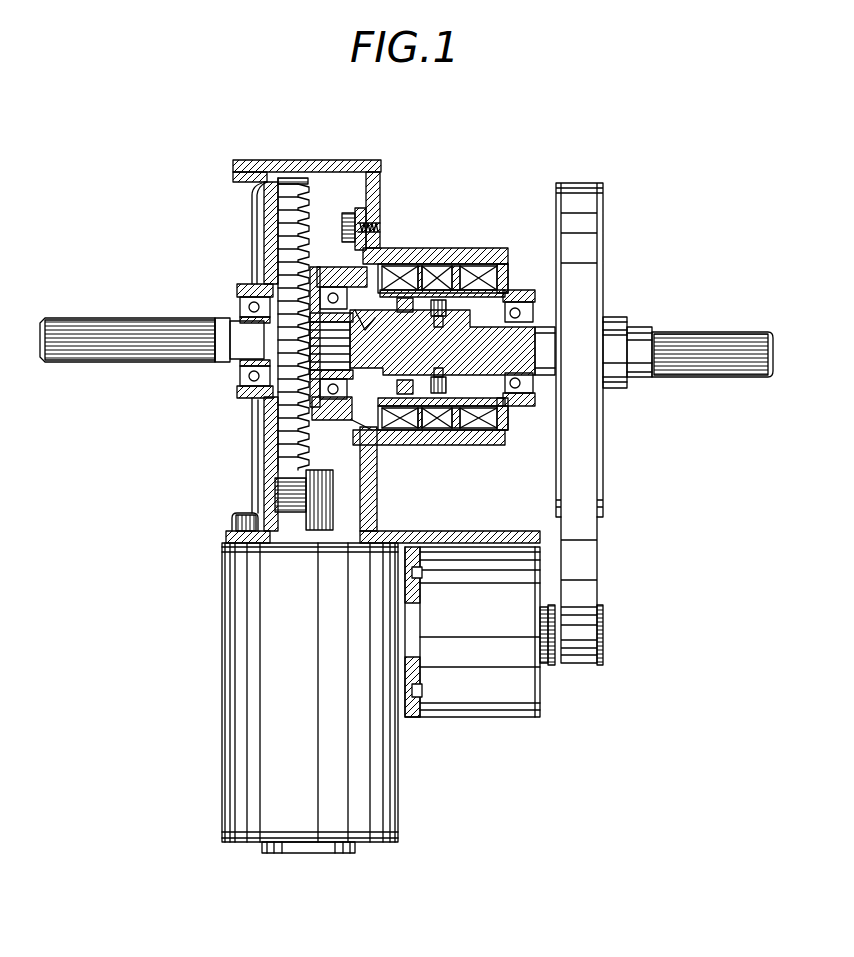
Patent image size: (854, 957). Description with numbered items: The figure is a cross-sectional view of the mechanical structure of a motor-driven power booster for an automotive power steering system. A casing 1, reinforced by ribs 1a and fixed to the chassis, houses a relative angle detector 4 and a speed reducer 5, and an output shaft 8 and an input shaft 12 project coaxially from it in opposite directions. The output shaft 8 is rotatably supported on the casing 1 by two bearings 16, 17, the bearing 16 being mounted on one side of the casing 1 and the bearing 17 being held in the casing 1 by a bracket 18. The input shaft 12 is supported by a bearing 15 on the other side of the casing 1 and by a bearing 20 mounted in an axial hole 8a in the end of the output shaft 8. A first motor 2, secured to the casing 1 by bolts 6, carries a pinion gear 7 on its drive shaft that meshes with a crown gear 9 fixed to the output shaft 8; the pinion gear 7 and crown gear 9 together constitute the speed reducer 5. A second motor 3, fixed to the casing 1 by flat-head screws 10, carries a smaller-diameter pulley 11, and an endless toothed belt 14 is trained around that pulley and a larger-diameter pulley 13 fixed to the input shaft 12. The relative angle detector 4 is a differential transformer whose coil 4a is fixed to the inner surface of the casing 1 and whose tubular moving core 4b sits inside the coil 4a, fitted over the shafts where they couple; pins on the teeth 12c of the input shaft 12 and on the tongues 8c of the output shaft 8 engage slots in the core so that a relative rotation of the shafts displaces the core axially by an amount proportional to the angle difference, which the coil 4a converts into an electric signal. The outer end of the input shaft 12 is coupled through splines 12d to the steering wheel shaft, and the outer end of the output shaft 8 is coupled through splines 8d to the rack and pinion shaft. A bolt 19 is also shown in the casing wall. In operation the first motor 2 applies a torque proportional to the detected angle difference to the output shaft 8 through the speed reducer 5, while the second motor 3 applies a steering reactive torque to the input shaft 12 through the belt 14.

The casing 1 is at (372, 160).
The ribs 1a is at (252, 199).
The first motor 2 is at (226, 742).
The second motor 3 is at (497, 708).
The relative angle detector 4 is at (470, 262).
The coil 4a is at (493, 277).
The tubular moving core 4b is at (504, 418).
The speed reducer 5 is at (285, 443).
The bolts 6 is at (232, 522).
The pinion gear 7 is at (335, 500).
The output shaft 8 is at (263, 350).
The axial hole 8a is at (368, 325).
The tongues 8c is at (470, 420).
The splines 8d is at (97, 328).
The crown gear 9 is at (307, 425).
The flat-head screws 10 is at (412, 570).
The smaller-diameter pulley 11 is at (603, 637).
The input shaft 12 is at (636, 371).
The teeth 12c is at (429, 297).
The splines 12d is at (718, 338).
The larger-diameter pulley 13 is at (603, 488).
The endless toothed belt 14 is at (585, 557).
The bearing 15 is at (522, 295).
The bearing 16 is at (237, 292).
The bearing 17 is at (312, 277).
The bracket 18 is at (337, 270).
The bolt 19 is at (350, 212).
The bearing 20 is at (388, 365).